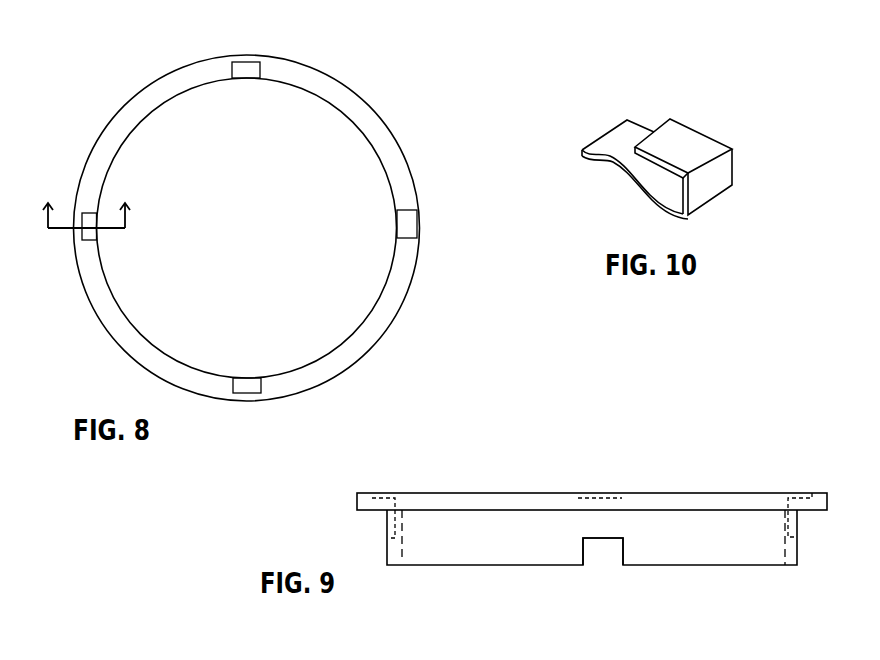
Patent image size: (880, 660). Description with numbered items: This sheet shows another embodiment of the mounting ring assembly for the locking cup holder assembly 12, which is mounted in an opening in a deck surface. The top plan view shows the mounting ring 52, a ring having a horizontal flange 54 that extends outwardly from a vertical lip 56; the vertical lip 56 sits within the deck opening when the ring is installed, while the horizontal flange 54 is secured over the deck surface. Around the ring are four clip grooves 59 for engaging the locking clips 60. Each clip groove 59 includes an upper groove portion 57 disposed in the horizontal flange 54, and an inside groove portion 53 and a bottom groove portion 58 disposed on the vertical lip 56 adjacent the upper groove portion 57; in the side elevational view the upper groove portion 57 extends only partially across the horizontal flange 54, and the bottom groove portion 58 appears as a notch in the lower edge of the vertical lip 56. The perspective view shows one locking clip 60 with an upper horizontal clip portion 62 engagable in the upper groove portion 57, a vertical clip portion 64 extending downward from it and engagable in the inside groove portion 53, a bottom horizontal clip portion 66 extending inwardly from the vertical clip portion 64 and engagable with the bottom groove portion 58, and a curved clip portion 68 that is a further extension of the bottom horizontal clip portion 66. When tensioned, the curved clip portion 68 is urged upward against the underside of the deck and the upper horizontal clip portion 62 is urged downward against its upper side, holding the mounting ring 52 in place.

In FIG. 8, the locking cup holder assembly 12 is at (88, 203).
In FIG. 8, the mounting ring 52 is at (417, 80).
In FIG. 9, the mounting ring 52 is at (592, 503).
In FIG. 8, the inside groove portion 53 is at (398, 235).
In FIG. 8, the horizontal flange 54 is at (419, 265).
In FIG. 9, the horizontal flange 54 is at (473, 502).
In FIG. 9, the vertical lip 56 is at (488, 545).
In FIG. 8, the upper groove portion 57 is at (399, 212).
In FIG. 9, the upper groove portion 57 is at (621, 500).
In FIG. 9, the bottom groove portion 58 is at (617, 552).
In FIG. 8, the clip grooves 59 is at (244, 372).
In FIG. 10, the locking clip 60 is at (684, 144).
In FIG. 10, the upper horizontal clip portion 62 is at (695, 140).
In FIG. 10, the vertical clip portion 64 is at (720, 177).
In FIG. 10, the bottom horizontal clip portion 66 is at (657, 210).
In FIG. 10, the curved clip portion 68 is at (605, 165).